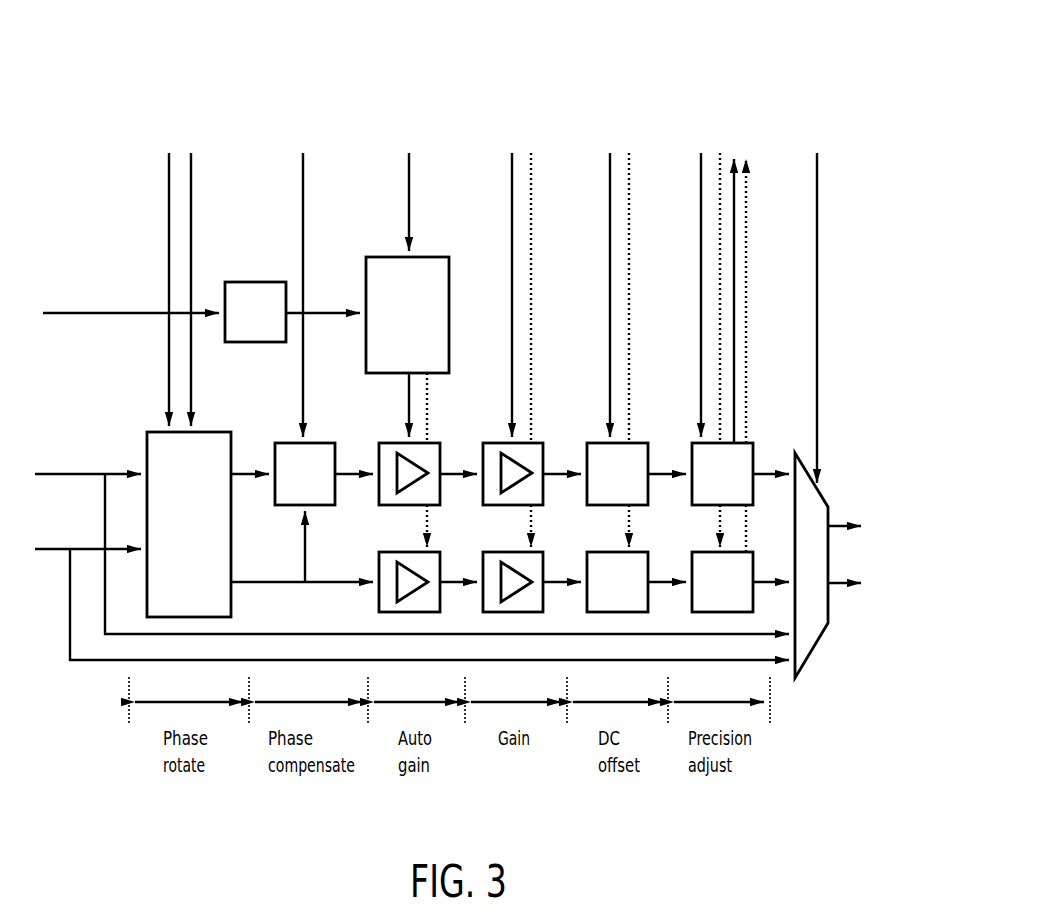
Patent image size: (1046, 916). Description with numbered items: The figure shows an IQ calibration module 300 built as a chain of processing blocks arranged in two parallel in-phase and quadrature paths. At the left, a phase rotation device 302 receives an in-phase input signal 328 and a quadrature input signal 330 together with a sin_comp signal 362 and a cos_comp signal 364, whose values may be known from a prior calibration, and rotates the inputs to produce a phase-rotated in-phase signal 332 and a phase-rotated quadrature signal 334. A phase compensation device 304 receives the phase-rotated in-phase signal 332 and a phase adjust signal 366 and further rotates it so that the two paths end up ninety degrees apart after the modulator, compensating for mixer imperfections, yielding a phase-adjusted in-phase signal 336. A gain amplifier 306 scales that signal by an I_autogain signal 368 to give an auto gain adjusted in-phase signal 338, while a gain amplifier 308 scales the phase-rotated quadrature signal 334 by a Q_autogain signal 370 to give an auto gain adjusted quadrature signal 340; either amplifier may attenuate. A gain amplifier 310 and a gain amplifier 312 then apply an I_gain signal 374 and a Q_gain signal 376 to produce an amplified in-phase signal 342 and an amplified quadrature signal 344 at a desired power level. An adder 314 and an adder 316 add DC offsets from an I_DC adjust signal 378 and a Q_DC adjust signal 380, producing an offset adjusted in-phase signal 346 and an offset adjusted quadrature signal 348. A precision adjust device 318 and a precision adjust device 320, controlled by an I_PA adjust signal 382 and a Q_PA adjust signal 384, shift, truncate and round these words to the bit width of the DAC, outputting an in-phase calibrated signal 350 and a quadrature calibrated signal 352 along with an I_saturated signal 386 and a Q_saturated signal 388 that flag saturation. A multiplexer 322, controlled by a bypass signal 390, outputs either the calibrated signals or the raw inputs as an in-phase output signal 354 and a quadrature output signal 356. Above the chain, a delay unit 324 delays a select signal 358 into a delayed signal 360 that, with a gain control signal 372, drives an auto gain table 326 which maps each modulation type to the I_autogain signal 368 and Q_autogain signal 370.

The IQ calibration module 300 is at (162, 68).
The phase rotation device 302 is at (189, 524).
The phase compensation device 304 is at (283, 505).
The gain amplifier 306 is at (440, 497).
The gain amplifier 308 is at (377, 597).
The gain amplifier 310 is at (543, 497).
The gain amplifier 312 is at (513, 612).
The adder 314 is at (648, 497).
The adder 316 is at (618, 612).
The precision adjust device 318 is at (753, 503).
The precision adjust device 320 is at (720, 612).
The multiplexer 322 is at (815, 648).
The delay unit 324 is at (255, 282).
The auto gain table 326 is at (420, 315).
The input signal 328 is at (125, 472).
The input signal 330 is at (130, 547).
The phase-rotated in-phase signal 332 is at (245, 472).
The phase-rotated quadrature signal 334 is at (249, 582).
The phase-adjusted in-phase signal 336 is at (342, 476).
The auto gain adjusted in-phase signal 338 is at (443, 474).
The auto gain adjusted quadrature signal 340 is at (445, 582).
The amplified in-phase signal 342 is at (555, 472).
The amplified quadrature signal 344 is at (548, 582).
The offset adjusted in-phase signal 346 is at (655, 472).
The offset adjusted quadrature signal 348 is at (652, 582).
The in-phase calibrated signal 350 is at (765, 472).
The quadrature calibrated signal 352 is at (757, 582).
The in-phase output signal 354 is at (835, 525).
The quadrature output signal 356 is at (843, 585).
The select signal 358 is at (118, 314).
The delayed signal 360 is at (333, 314).
The sin_comp signal 362 is at (169, 228).
The cos_comp signal 364 is at (191, 183).
The phase adjust signal 366 is at (303, 183).
The I_autogain signal 368 is at (409, 413).
The Q_autogain signal 370 is at (427, 412).
The gain control signal 372 is at (409, 228).
The I_gain signal 374 is at (512, 228).
The Q_gain signal 376 is at (531, 183).
The I_DC adjust signal 378 is at (610, 228).
The Q_DC adjust signal 380 is at (629, 183).
The I_PA adjust signal 382 is at (701, 312).
The Q_PA adjust signal 384 is at (720, 218).
The I_saturated signal 386 is at (746, 273).
The Q_saturated signal 388 is at (745, 207).
The bypass signal 390 is at (817, 183).